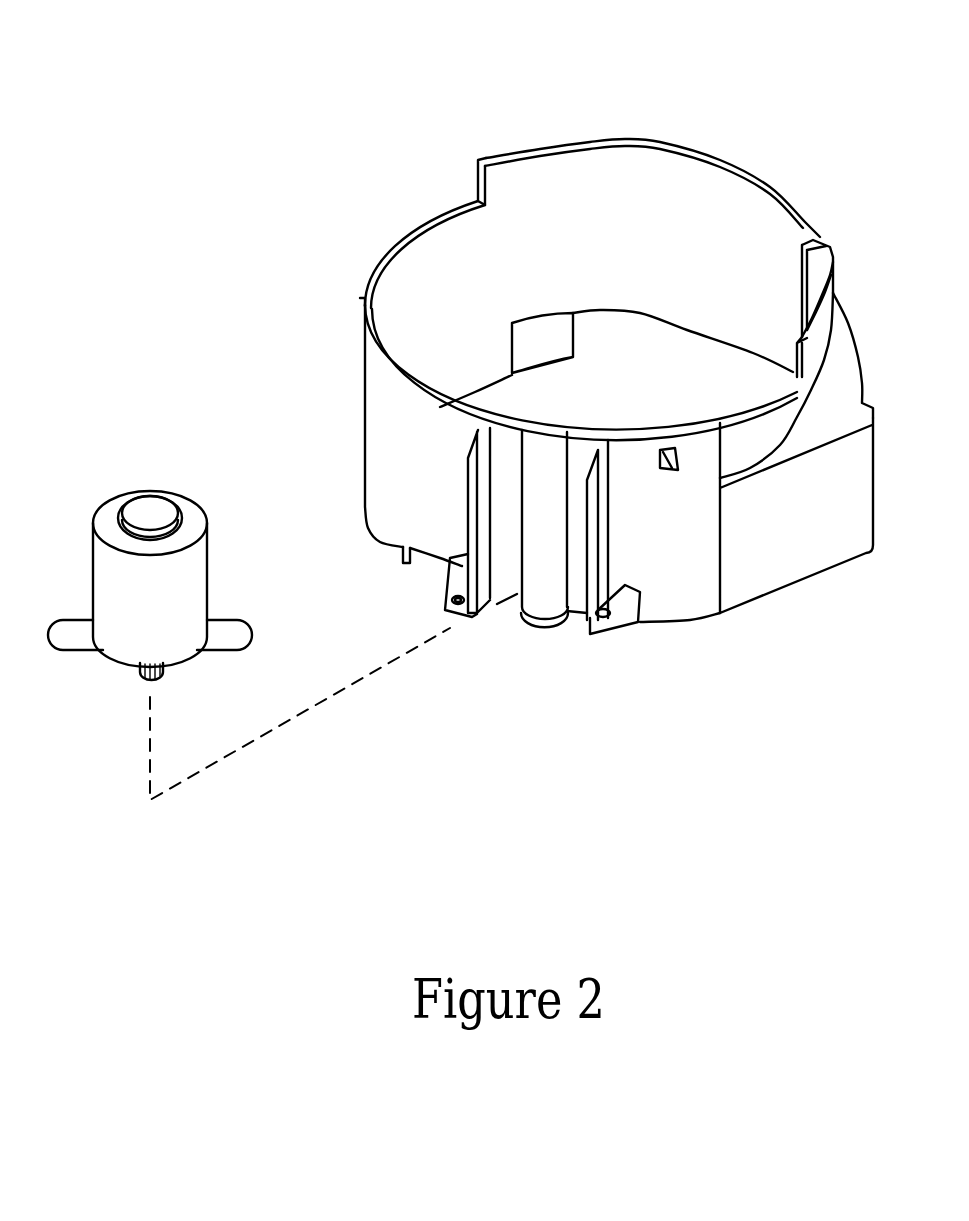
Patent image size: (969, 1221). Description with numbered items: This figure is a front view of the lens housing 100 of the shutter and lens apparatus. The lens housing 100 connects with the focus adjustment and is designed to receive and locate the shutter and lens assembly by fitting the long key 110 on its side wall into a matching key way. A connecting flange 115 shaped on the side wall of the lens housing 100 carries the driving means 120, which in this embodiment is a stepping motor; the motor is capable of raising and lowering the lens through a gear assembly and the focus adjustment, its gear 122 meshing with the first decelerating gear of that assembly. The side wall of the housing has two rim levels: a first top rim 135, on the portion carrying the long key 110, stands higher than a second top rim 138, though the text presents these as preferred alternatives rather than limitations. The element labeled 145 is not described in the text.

The lens housing 100 is at (660, 143).
The long key 110 is at (817, 236).
The connecting flange 115 is at (447, 590).
The driving means 120 is at (143, 490).
The gear 122 is at (137, 668).
The first top rim 135 is at (492, 158).
The second top rim 138 is at (407, 232).
The retaining tab 145 is at (670, 473).